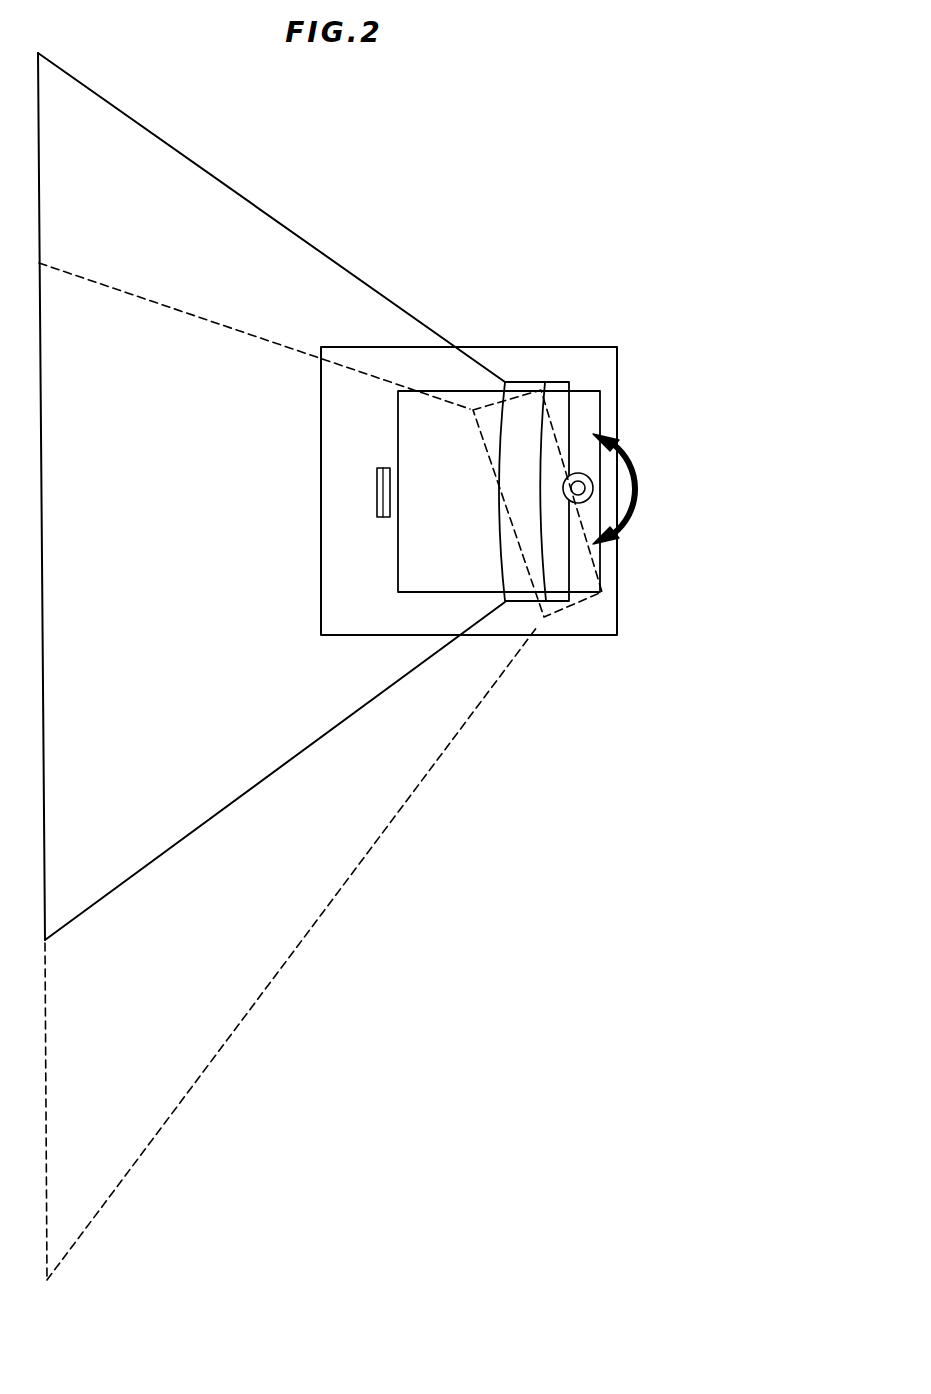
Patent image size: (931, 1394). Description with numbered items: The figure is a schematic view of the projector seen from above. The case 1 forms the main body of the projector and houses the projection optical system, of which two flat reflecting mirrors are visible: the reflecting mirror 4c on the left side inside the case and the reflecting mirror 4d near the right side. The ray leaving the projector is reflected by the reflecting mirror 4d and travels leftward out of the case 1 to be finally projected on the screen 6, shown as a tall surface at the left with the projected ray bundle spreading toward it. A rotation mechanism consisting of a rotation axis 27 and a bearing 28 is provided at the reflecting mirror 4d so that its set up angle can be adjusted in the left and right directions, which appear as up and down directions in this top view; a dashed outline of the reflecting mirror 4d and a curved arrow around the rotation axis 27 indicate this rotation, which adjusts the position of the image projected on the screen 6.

The case 1 is at (580, 625).
The reflecting mirror 4c is at (377, 500).
The reflecting mirror 4d is at (557, 410).
The screen 6 is at (45, 878).
The rotation axis 27 is at (585, 488).
The bearing 28 is at (597, 545).